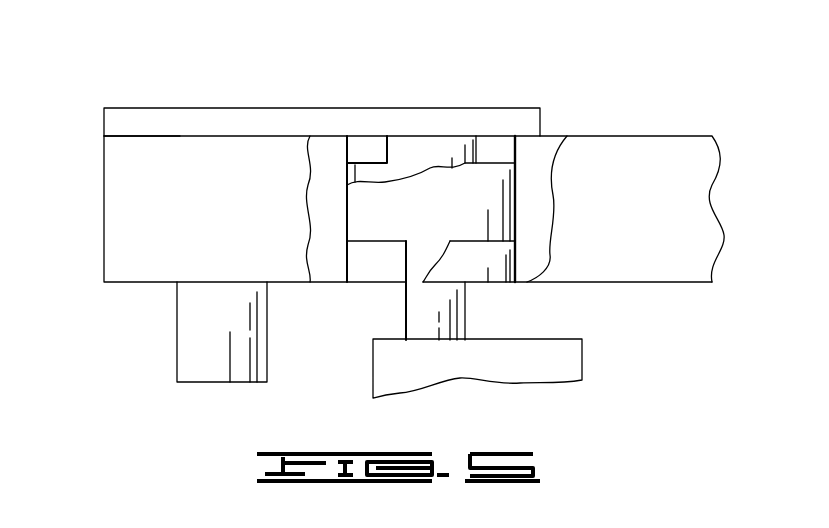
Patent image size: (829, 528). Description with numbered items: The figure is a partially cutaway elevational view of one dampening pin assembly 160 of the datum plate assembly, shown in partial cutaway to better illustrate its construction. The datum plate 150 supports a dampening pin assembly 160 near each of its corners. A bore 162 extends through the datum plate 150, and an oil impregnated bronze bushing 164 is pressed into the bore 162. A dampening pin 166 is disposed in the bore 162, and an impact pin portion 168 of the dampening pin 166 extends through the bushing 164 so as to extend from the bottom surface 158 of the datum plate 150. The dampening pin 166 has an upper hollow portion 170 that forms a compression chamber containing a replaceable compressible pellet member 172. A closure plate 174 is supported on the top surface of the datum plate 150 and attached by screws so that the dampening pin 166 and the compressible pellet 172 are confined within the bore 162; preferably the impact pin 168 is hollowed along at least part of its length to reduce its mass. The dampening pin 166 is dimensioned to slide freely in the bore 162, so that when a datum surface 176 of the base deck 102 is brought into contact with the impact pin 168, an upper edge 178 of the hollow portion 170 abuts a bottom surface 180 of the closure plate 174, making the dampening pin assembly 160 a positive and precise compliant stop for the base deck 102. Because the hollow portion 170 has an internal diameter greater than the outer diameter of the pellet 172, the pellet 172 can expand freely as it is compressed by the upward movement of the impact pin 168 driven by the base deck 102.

The base deck 102 is at (572, 375).
The datum plate 150 is at (652, 151).
The bottom surface 158 is at (297, 283).
The dampening pin assembly 160 is at (457, 221).
The bore 162 is at (503, 150).
The oil impregnated bronze bushing 164 is at (516, 263).
The dampening pin 166 is at (370, 211).
The impact pin portion 168 is at (466, 322).
The upper hollow portion 170 is at (514, 187).
The compressible pellet member 172 is at (414, 152).
The closure plate 174 is at (170, 124).
The datum surface 176 is at (383, 338).
The upper edge 178 is at (371, 162).
The bottom surface 180 is at (152, 137).